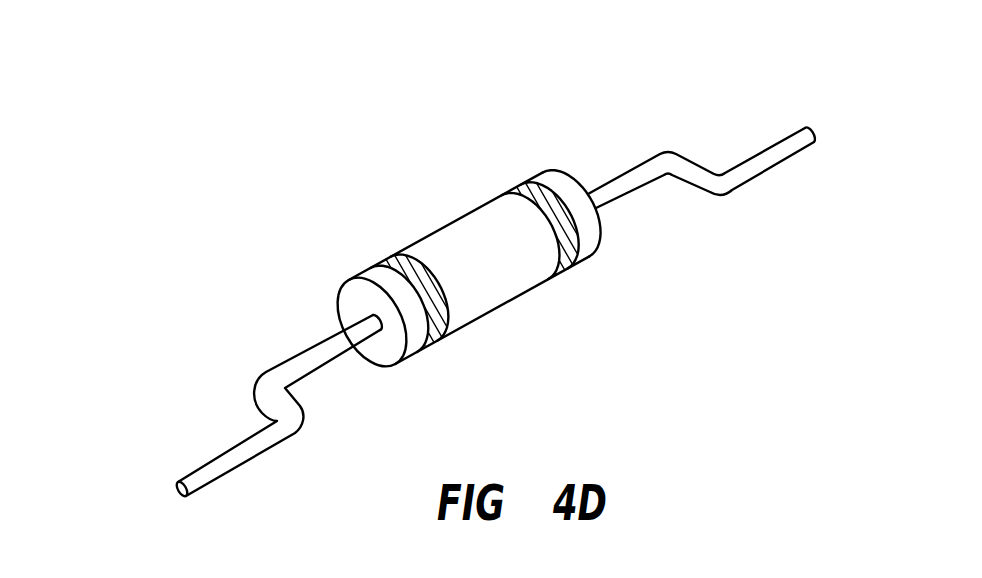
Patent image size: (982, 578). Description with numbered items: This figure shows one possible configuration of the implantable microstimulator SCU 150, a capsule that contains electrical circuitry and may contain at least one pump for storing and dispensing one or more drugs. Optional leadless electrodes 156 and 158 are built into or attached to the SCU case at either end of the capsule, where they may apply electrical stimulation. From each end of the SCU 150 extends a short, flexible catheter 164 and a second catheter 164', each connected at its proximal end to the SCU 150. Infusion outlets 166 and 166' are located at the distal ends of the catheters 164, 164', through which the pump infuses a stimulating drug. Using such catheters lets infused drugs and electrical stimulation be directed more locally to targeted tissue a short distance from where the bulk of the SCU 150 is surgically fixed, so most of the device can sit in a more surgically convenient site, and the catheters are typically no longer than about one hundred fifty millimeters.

The SCU 150 is at (268, 218).
The electrode 156 is at (527, 192).
The electrode 158 is at (400, 270).
The catheter 164 is at (219, 411).
The second catheter 164' is at (729, 164).
The infusion outlet 166 is at (122, 504).
The infusion outlet 166' is at (836, 100).